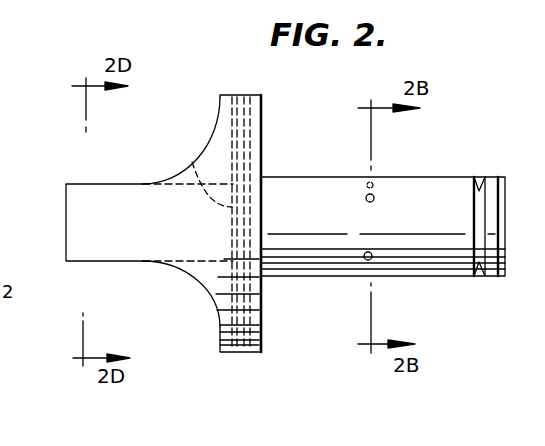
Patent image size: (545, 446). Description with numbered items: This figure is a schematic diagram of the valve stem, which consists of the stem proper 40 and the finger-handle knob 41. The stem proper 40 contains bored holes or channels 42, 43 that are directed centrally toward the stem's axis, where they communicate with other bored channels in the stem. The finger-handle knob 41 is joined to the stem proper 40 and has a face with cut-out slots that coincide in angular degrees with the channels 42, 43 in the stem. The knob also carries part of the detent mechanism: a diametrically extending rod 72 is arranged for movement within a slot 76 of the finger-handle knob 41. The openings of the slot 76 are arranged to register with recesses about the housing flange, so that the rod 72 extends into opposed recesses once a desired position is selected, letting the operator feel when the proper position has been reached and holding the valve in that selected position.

The stem proper 40 is at (293, 290).
The finger-handle knob 41 is at (131, 203).
The bored hole or channel 42 is at (374, 197).
The bored hole or channel 43 is at (372, 257).
The diametrically extending rod 72 is at (244, 92).
The slot 76 is at (192, 162).